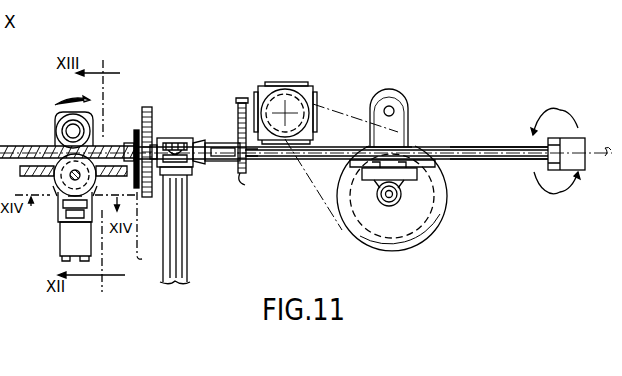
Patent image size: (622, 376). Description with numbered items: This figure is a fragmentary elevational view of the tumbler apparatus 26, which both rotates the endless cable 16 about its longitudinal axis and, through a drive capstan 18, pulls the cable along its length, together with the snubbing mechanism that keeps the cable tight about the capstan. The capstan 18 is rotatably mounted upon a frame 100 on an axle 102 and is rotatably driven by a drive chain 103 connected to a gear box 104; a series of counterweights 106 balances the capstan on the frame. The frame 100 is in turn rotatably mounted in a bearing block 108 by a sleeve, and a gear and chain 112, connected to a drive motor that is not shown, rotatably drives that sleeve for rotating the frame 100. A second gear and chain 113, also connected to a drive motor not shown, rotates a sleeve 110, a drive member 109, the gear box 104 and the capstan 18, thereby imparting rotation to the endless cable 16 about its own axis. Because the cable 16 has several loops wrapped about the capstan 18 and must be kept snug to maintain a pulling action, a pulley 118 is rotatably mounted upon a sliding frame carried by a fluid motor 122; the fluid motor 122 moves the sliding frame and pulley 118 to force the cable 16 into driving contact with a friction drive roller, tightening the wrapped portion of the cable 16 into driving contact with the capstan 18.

The endless cable 16 is at (18, 146).
The capstan 18 is at (420, 242).
The tumbler apparatus 26 is at (470, 100).
The frame 100 is at (470, 160).
The axle 102 is at (400, 200).
The drive chain 103 is at (299, 172).
The gear box 104 is at (292, 84).
The counterweights 106 is at (407, 96).
The bearing block 108 is at (170, 138).
The drive member 109 is at (246, 174).
The sleeve 110 is at (127, 142).
The gear and chain 112 is at (152, 110).
The gear and chain 113 is at (137, 129).
The pulley 118 is at (50, 196).
The fluid motor 122 is at (62, 238).